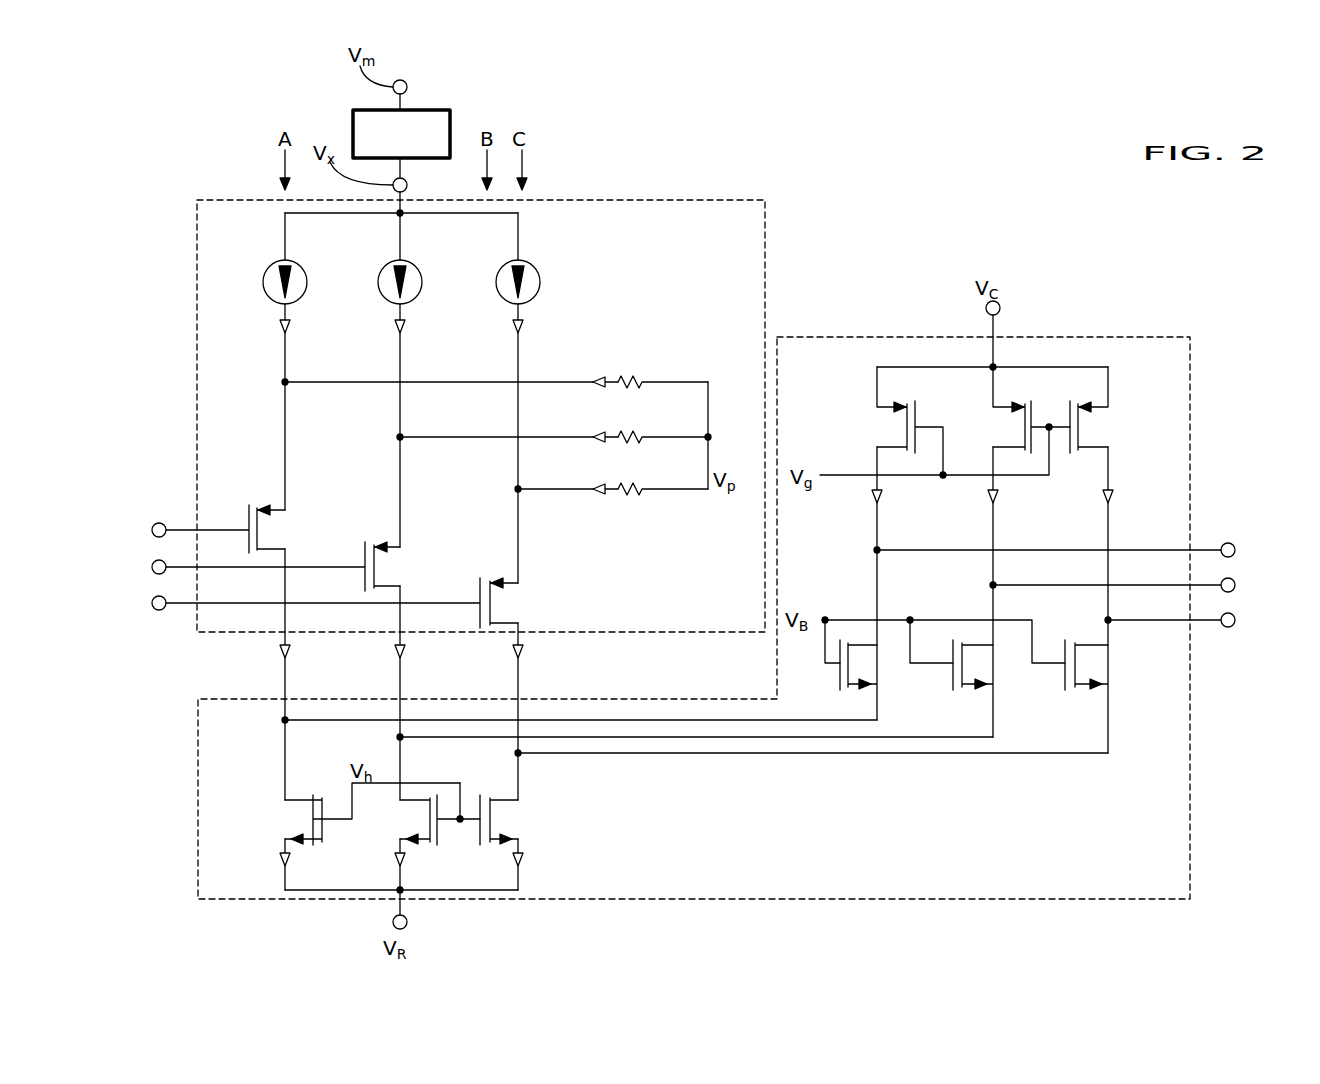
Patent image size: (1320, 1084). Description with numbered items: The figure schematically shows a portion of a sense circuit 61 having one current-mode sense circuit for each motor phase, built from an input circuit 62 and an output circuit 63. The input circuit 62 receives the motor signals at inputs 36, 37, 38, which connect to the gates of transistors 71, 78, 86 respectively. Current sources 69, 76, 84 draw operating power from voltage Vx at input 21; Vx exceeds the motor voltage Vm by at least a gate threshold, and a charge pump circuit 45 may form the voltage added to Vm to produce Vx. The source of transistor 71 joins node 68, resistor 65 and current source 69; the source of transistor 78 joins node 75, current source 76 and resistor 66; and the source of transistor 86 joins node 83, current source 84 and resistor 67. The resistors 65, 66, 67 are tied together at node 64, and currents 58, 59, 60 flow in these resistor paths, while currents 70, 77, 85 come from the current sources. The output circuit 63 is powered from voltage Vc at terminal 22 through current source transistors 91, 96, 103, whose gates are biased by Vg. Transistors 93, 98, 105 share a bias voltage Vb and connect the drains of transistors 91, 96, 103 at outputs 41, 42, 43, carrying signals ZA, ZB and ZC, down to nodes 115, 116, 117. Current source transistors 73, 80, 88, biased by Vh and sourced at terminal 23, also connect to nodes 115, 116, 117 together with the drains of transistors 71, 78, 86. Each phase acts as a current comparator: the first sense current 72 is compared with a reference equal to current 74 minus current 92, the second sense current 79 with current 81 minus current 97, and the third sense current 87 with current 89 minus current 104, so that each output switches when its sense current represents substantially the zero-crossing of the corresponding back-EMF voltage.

The input 21 is at (408, 185).
The terminal 22 is at (1002, 308).
The terminal 23 is at (408, 922).
The input 36 is at (159, 523).
The input 37 is at (159, 560).
The input 38 is at (159, 596).
The output 41 is at (1232, 545).
The output 42 is at (1232, 580).
The output 43 is at (1232, 615).
The charge pump circuit 45 is at (425, 110).
The current 58 is at (590, 380).
The current 59 is at (590, 435).
The current 60 is at (590, 488).
The sense circuit 61 is at (866, 246).
The input circuit 62 is at (670, 200).
The output circuit 63 is at (1140, 337).
The node 64 is at (710, 437).
The resistor 65 is at (635, 380).
The resistor 66 is at (635, 435).
The resistor 67 is at (635, 487).
The node 68 is at (283, 384).
The current source 69 is at (263, 282).
The current 70 is at (278, 325).
The transistor 71 is at (282, 530).
The current 72 is at (280, 655).
The current source transistor 73 is at (290, 815).
The current 74 is at (283, 862).
The node 75 is at (398, 439).
The current source 76 is at (378, 282).
The current 77 is at (393, 325).
The transistor 78 is at (397, 567).
The current 79 is at (395, 655).
The current source transistor 80 is at (420, 840).
The current 81 is at (398, 865).
The node 83 is at (516, 490).
The current source 84 is at (496, 282).
The current 85 is at (513, 325).
The transistor 86 is at (513, 603).
The current 87 is at (523, 655).
The current source transistor 88 is at (515, 820).
The current 89 is at (520, 865).
The current source transistor 91 is at (885, 432).
The current 92 is at (875, 505).
The transistor 93 is at (877, 673).
The current source transistor 96 is at (997, 432).
The current 97 is at (990, 505).
The transistor 98 is at (990, 673).
The current source transistor 103 is at (1105, 432).
The current 104 is at (1105, 505).
The transistor 105 is at (1103, 673).
The node 115 is at (283, 722).
The node 116 is at (398, 739).
The node 117 is at (520, 755).